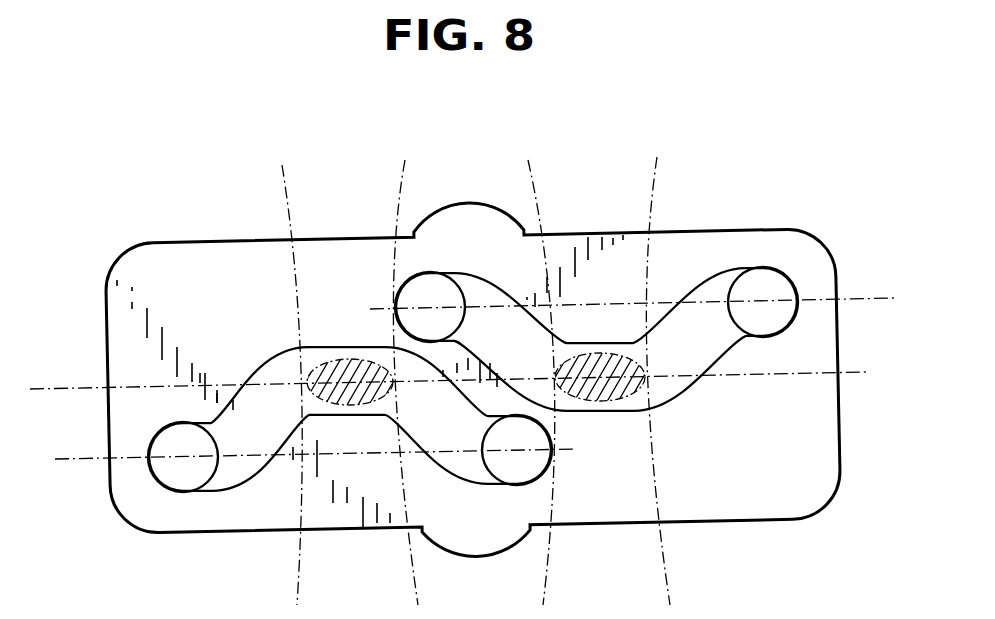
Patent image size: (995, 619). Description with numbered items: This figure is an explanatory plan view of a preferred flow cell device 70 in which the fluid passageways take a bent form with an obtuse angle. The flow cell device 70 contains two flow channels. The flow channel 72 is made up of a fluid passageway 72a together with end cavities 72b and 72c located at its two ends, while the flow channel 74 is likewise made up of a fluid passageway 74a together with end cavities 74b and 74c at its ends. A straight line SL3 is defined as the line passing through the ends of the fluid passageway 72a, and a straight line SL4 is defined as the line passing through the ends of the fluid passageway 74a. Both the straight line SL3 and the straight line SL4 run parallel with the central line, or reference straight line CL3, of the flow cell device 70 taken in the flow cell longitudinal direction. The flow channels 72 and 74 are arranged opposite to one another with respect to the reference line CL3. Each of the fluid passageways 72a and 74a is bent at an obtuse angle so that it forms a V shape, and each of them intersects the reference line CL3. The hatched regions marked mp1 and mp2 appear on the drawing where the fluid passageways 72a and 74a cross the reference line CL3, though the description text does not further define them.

The flow cell device 70 is at (594, 176).
The flow channel 72 is at (385, 424).
The fluid passageway 72a is at (431, 448).
The end cavity 72b is at (187, 492).
The end cavity 72c is at (543, 477).
The flow channel 74 is at (649, 355).
The fluid passageway 74a is at (716, 359).
The end cavity 74b is at (447, 280).
The end cavity 74c is at (799, 320).
The first intermediate position mp1 is at (345, 352).
The second intermediate position mp2 is at (603, 403).
The straight line SL3 is at (75, 463).
The straight line SL4 is at (868, 297).
The reference straight line CL3 is at (50, 393).